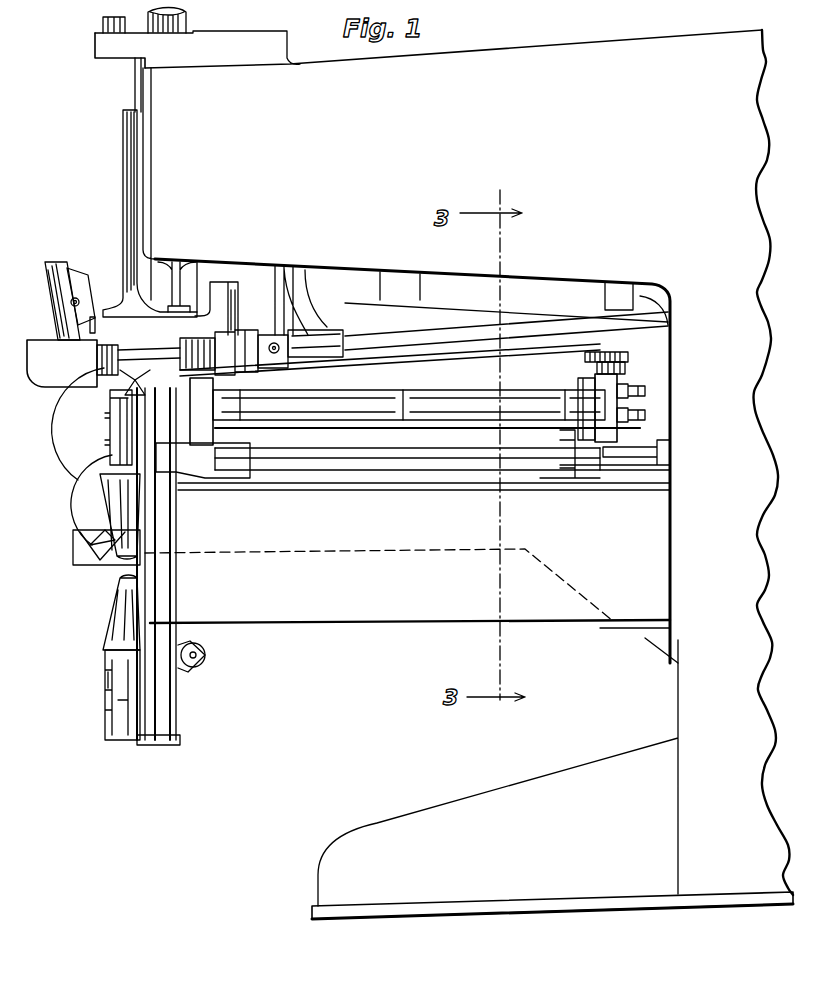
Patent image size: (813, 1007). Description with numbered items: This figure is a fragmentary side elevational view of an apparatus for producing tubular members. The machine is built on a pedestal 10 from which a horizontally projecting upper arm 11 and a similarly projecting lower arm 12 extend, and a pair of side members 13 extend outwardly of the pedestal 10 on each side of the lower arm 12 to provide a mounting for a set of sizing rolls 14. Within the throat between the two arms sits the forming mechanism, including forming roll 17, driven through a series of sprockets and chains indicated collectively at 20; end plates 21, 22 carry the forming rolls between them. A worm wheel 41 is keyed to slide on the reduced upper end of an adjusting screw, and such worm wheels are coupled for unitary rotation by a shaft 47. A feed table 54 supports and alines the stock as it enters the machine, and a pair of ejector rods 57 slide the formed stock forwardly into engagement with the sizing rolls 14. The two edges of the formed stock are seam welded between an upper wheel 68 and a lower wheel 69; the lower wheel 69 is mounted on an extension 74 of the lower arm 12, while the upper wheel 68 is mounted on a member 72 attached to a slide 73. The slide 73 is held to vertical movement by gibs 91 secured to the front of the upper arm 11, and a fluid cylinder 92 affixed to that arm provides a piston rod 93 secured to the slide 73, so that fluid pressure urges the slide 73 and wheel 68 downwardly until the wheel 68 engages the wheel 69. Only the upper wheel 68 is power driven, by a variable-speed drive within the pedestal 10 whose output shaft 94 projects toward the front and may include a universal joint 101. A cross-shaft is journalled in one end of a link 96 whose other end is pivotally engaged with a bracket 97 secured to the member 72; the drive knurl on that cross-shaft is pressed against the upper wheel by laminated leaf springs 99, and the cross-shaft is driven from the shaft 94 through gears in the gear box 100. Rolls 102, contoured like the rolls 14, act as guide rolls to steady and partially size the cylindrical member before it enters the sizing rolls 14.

The pedestal 10 is at (672, 710).
The upper arm 11 is at (503, 70).
The lower arm 12 is at (420, 551).
The side members 13 is at (330, 614).
The sizing rolls 14 is at (115, 612).
The forming roll 17 is at (463, 406).
The sprockets and chains 20 is at (648, 408).
The end plate 21 is at (610, 400).
The end plate 22 is at (205, 408).
The worm wheel 41 is at (600, 352).
The shaft 47 is at (396, 364).
The feed table 54 is at (315, 442).
The ejector rods 57 is at (641, 460).
The upper welding wheel 68 is at (82, 428).
The lower welding wheel 69 is at (95, 482).
The member 72 is at (148, 332).
The slide 73 is at (134, 222).
The extension 74 is at (85, 552).
The gibs 91 is at (152, 172).
The fluid cylinder 92 is at (186, 22).
The piston rod 93 is at (136, 80).
The output shaft 94 is at (460, 330).
The link 96 is at (65, 330).
The bracket 97 is at (95, 322).
The laminated leaf springs 99 is at (34, 300).
The gear box 100 is at (50, 378).
The universal joint 101 is at (330, 335).
The guide rolls 102 is at (206, 664).